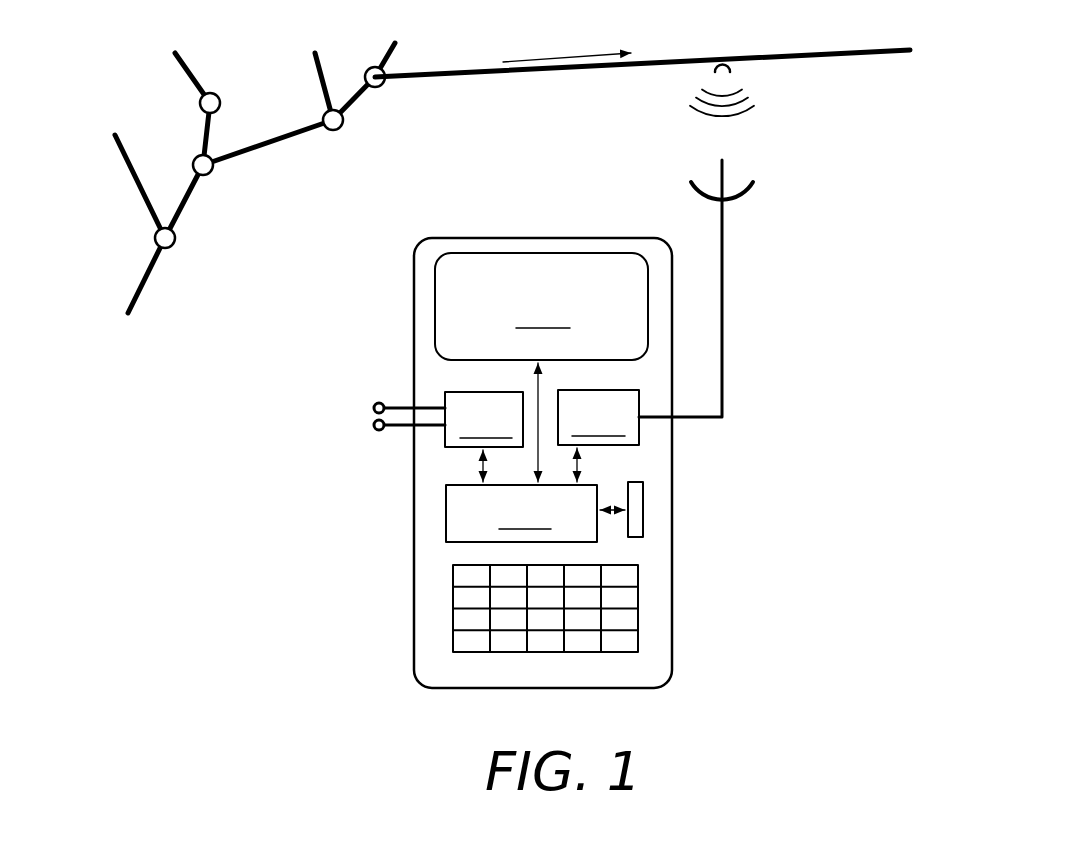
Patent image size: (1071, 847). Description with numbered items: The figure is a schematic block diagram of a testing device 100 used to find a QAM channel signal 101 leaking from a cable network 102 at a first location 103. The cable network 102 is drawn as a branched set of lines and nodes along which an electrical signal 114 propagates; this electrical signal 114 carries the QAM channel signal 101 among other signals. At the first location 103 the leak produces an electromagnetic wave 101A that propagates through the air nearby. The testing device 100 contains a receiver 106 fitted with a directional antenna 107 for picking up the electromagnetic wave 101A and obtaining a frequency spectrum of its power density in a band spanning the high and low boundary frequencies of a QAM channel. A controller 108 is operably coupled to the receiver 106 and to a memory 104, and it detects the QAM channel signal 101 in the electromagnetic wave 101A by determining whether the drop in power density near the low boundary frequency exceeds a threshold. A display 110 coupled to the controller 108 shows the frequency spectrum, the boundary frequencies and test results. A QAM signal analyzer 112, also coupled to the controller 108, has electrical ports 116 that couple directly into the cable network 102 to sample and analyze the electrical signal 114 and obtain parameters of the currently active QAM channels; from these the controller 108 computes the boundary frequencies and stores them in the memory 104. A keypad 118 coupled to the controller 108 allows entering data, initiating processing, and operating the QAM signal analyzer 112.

The testing device 100 is at (411, 538).
The QAM channel signal 101 is at (571, 54).
The electromagnetic wave 101A is at (775, 91).
The cable network 102 is at (266, 219).
The first location 103 is at (719, 46).
The memory 104 is at (643, 500).
The receiver 106 is at (598, 417).
The directional antenna 107 is at (723, 268).
The controller 108 is at (521, 513).
The display 110 is at (541, 306).
The QAM signal analyzer 112 is at (484, 419).
The electrical signal 114 is at (295, 153).
The electrical ports 116 is at (356, 418).
The keypad 118 is at (638, 598).